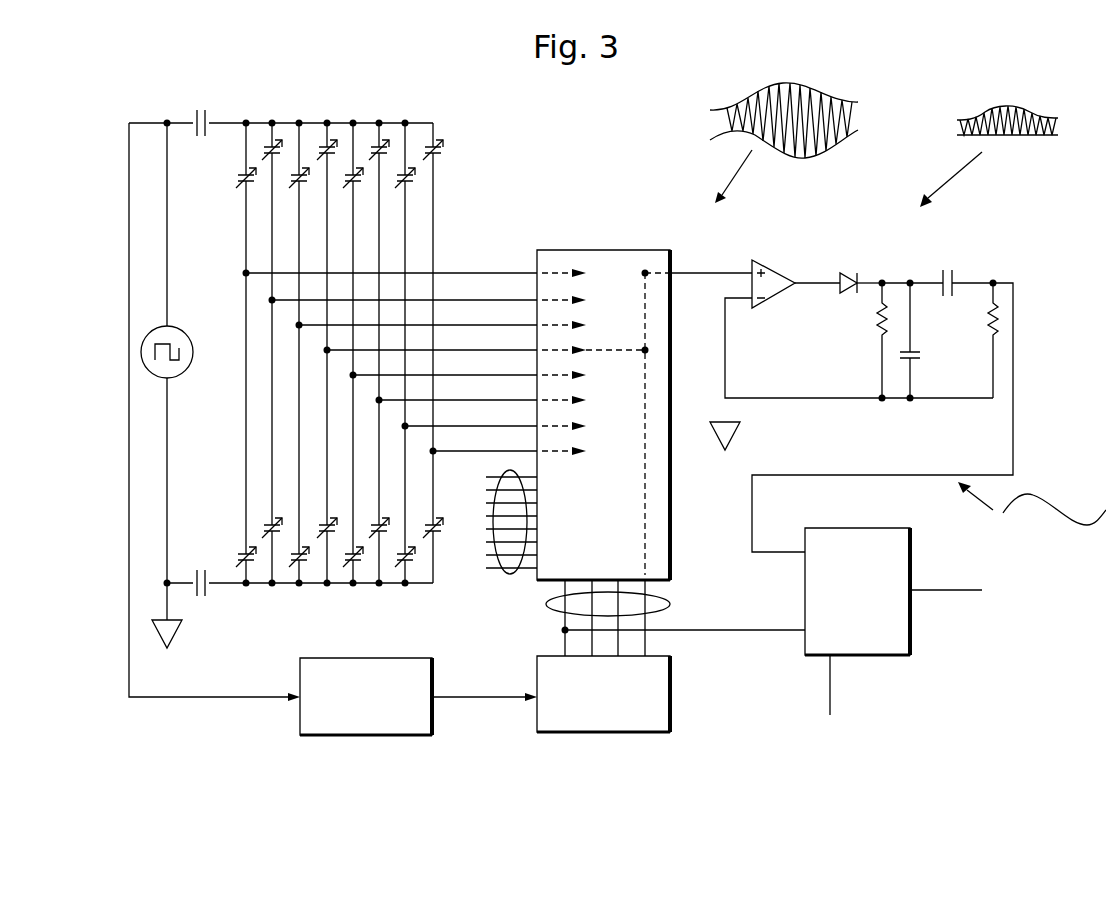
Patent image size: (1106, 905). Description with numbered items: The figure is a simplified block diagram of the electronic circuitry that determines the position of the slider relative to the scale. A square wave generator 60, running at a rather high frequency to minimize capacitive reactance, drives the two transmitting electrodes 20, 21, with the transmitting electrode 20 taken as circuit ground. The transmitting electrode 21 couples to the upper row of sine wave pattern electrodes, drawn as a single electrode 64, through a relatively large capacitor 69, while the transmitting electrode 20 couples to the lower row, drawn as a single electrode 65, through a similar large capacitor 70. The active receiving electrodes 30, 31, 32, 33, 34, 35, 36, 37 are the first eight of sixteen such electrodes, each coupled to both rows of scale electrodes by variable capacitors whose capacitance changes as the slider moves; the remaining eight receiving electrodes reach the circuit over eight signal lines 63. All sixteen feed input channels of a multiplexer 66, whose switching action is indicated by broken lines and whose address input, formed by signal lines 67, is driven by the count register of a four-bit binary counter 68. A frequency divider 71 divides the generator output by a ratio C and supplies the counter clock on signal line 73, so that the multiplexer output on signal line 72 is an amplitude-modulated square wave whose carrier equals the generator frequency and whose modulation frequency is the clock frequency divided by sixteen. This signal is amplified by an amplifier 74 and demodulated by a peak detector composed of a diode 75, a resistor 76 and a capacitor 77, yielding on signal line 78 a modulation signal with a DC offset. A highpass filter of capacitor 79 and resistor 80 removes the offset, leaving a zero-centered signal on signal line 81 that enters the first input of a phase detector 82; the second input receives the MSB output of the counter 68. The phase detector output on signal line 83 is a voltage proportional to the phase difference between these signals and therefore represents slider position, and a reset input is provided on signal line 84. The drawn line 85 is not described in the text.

The transmitting electrode 20 is at (192, 590).
The transmitting electrode 21 is at (183, 120).
The active receiving electrode 30 is at (243, 188).
The active receiving electrode 31 is at (270, 160).
The active receiving electrode 32 is at (303, 187).
The active receiving electrode 33 is at (328, 160).
The active receiving electrode 34 is at (358, 184).
The active receiving electrode 35 is at (377, 158).
The active receiving electrode 36 is at (408, 183).
The active receiving electrode 37 is at (437, 160).
The square wave generator 60 is at (186, 332).
The signal lines 63 is at (510, 575).
The upper row sine wave electrodes (single electrode) 64 is at (237, 120).
The lower row sine wave electrodes (single electrode) 65 is at (238, 587).
The multiplexer 66 is at (604, 250).
The address input signal lines 67 is at (670, 604).
The 4-bit binary counter 68 is at (613, 735).
The capacitor 69 is at (199, 108).
The capacitor 70 is at (195, 570).
The frequency divider 71 is at (368, 737).
The signal line 72 is at (704, 268).
The signal line 73 is at (480, 700).
The amplifier 74 is at (776, 270).
The diode 75 is at (848, 270).
The resistor 76 is at (878, 322).
The capacitor 77 is at (915, 352).
The signal line 78 is at (910, 280).
The capacitor 79 is at (948, 270).
The resistor 80 is at (988, 332).
The signal line 81 is at (910, 473).
The phase detector 82 is at (880, 528).
The signal line 83 is at (940, 588).
The reset signal line 84 is at (840, 697).
The clock line 85 is at (212, 703).